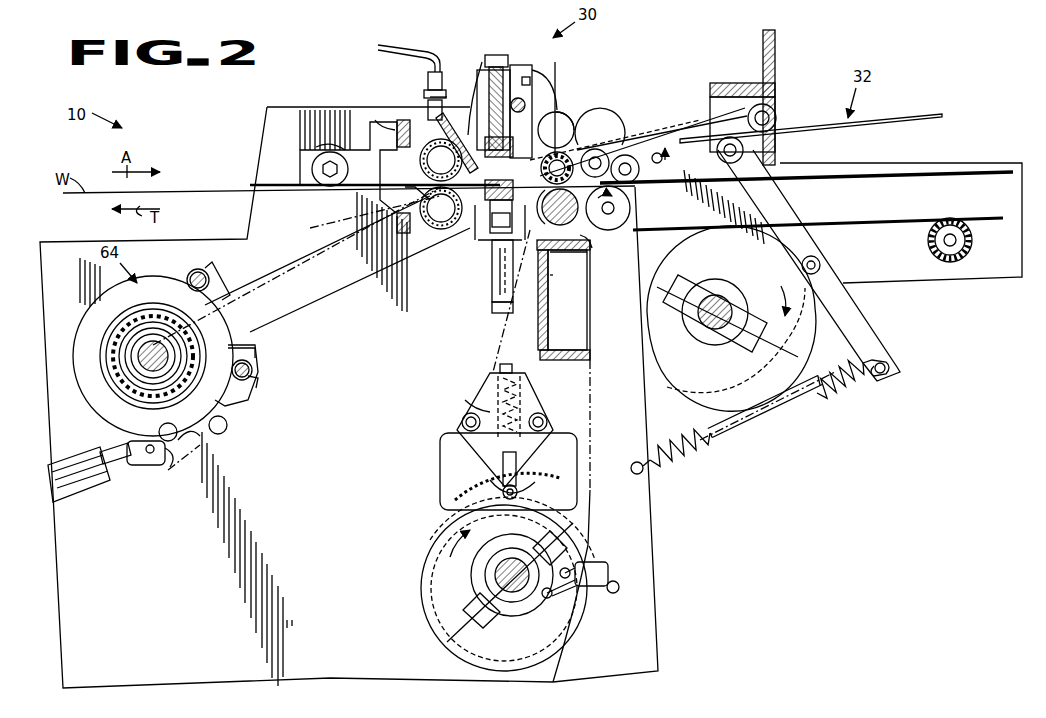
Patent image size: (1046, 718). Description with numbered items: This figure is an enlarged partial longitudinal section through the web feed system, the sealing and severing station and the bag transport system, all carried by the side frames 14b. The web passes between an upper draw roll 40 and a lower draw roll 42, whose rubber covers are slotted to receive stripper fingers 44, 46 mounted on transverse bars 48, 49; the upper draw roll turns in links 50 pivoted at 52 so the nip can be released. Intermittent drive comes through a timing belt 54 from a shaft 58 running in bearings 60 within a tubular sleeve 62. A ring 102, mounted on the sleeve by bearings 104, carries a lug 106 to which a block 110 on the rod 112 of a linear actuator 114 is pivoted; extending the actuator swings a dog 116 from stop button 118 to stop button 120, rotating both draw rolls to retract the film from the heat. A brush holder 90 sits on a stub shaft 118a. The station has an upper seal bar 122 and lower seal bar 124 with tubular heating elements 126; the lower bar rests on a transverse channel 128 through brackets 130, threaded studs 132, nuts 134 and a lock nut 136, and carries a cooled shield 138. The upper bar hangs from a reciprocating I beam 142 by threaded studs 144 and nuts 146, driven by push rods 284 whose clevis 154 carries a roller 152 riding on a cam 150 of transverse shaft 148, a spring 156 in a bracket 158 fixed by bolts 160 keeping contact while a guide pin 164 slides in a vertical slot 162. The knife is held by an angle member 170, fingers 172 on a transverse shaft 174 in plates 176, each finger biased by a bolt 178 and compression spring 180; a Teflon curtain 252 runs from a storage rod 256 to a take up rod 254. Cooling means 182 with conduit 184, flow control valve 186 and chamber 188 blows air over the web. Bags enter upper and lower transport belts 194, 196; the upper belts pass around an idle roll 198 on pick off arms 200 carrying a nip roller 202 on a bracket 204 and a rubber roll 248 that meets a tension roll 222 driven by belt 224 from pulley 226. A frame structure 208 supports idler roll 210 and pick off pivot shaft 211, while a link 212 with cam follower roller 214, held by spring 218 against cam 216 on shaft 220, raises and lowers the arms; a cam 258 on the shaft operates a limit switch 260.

The side frames 14b is at (293, 536).
The upper draw roll 40 is at (422, 166).
The lower draw roll 42 is at (425, 211).
The stripper fingers 44 is at (392, 158).
The stripper fingers 46 is at (422, 198).
The transverse bar 48 is at (385, 124).
The transverse bar 49 is at (397, 236).
The links 50 is at (322, 150).
The pivot 52 is at (312, 167).
The timing belt 54 is at (330, 235).
The shaft 58 is at (150, 340).
The bearings 60 is at (180, 335).
The tubular sleeve 62 is at (120, 370).
The brush holder 90 is at (232, 400).
The ring 102 is at (92, 322).
The bearings 104 is at (116, 393).
The lug 106 is at (228, 423).
The block 110 is at (140, 462).
The rod 112 is at (112, 468).
The linear actuator 114 is at (65, 498).
The dog 116 is at (220, 268).
The stop button 118 is at (252, 366).
The stub shaft 118a is at (252, 376).
The stop button 120 is at (198, 270).
The upper seal bar 122 is at (556, 130).
The lower seal bar 124 is at (476, 240).
The tubular heating element 126 is at (492, 268).
The transverse channel 128 is at (580, 311).
The brackets 130 is at (490, 303).
The threaded stud 132 is at (492, 283).
The nuts 134 is at (566, 280).
The nut 136 is at (568, 262).
The shield 138 is at (480, 245).
The I beam 142 is at (504, 68).
The threaded studs 144 is at (495, 60).
The nuts 146 is at (480, 78).
The transverse shaft 148 is at (516, 592).
The cam 150 is at (428, 550).
The roller 152 is at (518, 492).
The clevis 154 is at (522, 483).
The spring 156 is at (482, 386).
The bracket 158 is at (466, 402).
The bolts 160 is at (462, 423).
The vertical slot 162 is at (500, 452).
The guide pin 164 is at (498, 483).
The angle member 170 is at (557, 207).
The fingers 172 is at (592, 148).
The transverse shaft 174 is at (526, 103).
The plates 176 is at (533, 63).
The bolt 178 is at (531, 80).
The compression spring 180 is at (520, 72).
The cooling means 182 is at (428, 97).
The conduit 184 is at (377, 47).
The flow control valve 186 is at (428, 73).
The chamber 188 is at (421, 133).
The upper transport belts 194 is at (887, 118).
The lower transport belts 196 is at (888, 185).
The idle roll 198 is at (650, 132).
The pick off arms 200 is at (708, 135).
The nip roller 202 is at (630, 198).
The bracket 204 is at (677, 153).
The frame structure 208 is at (776, 60).
The idler roll 210 is at (776, 112).
The pick off pivot shaft 211 is at (744, 152).
The link 212 is at (803, 238).
The cam follower roller 214 is at (822, 262).
The cam 216 is at (728, 374).
The spring 218 is at (822, 408).
The shaft 220 is at (716, 296).
The lower rubber covered roll 222 is at (601, 245).
The belt 224 is at (590, 383).
The pulley 226 is at (440, 530).
The rubber roll 248 is at (612, 122).
The curtain 252 is at (440, 116).
The take up rod 254 is at (440, 92).
The storage rod 256 is at (560, 120).
The cam 258 is at (508, 541).
The limit switch 260 is at (606, 565).
The push rods 284 is at (498, 368).